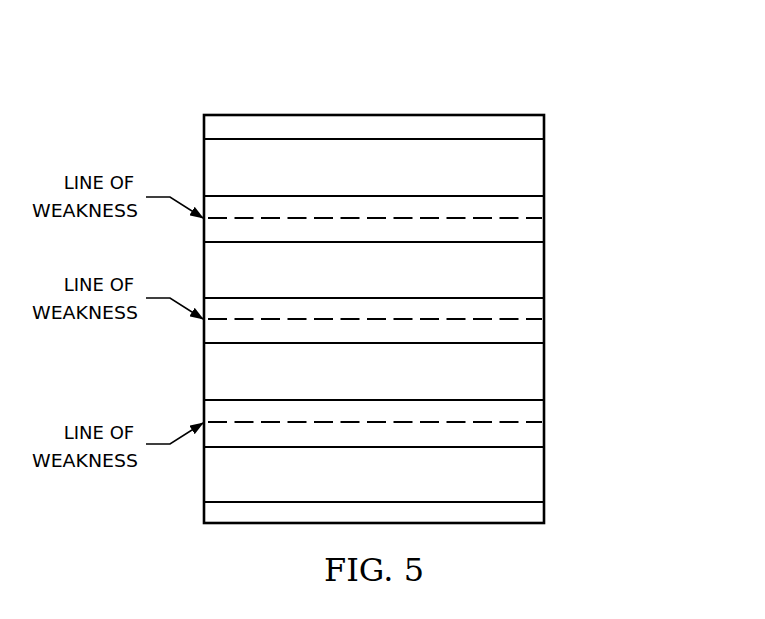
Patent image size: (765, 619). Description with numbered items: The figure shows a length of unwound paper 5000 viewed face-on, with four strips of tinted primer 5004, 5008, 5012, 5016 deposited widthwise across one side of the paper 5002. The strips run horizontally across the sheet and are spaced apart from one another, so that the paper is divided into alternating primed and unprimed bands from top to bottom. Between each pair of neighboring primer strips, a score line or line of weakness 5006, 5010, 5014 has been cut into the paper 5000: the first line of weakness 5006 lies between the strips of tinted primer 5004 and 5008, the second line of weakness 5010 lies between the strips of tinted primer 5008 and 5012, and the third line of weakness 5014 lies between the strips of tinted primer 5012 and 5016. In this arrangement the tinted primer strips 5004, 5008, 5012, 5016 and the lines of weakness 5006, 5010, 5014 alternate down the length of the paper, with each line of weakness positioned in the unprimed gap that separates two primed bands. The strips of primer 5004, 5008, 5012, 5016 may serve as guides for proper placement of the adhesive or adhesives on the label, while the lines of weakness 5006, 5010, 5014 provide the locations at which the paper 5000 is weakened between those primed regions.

The unwound paper 5000 is at (281, 93).
The one side of the paper 5002 is at (536, 128).
The strip of tinted primer 5004 is at (536, 167).
The score line or line of weakness 5006 is at (536, 206).
The strip of tinted primer 5008 is at (536, 268).
The score line or line of weakness 5010 is at (536, 333).
The strip of tinted primer 5012 is at (536, 375).
The score line or line of weakness 5014 is at (536, 435).
The strip of tinted primer 5016 is at (536, 473).